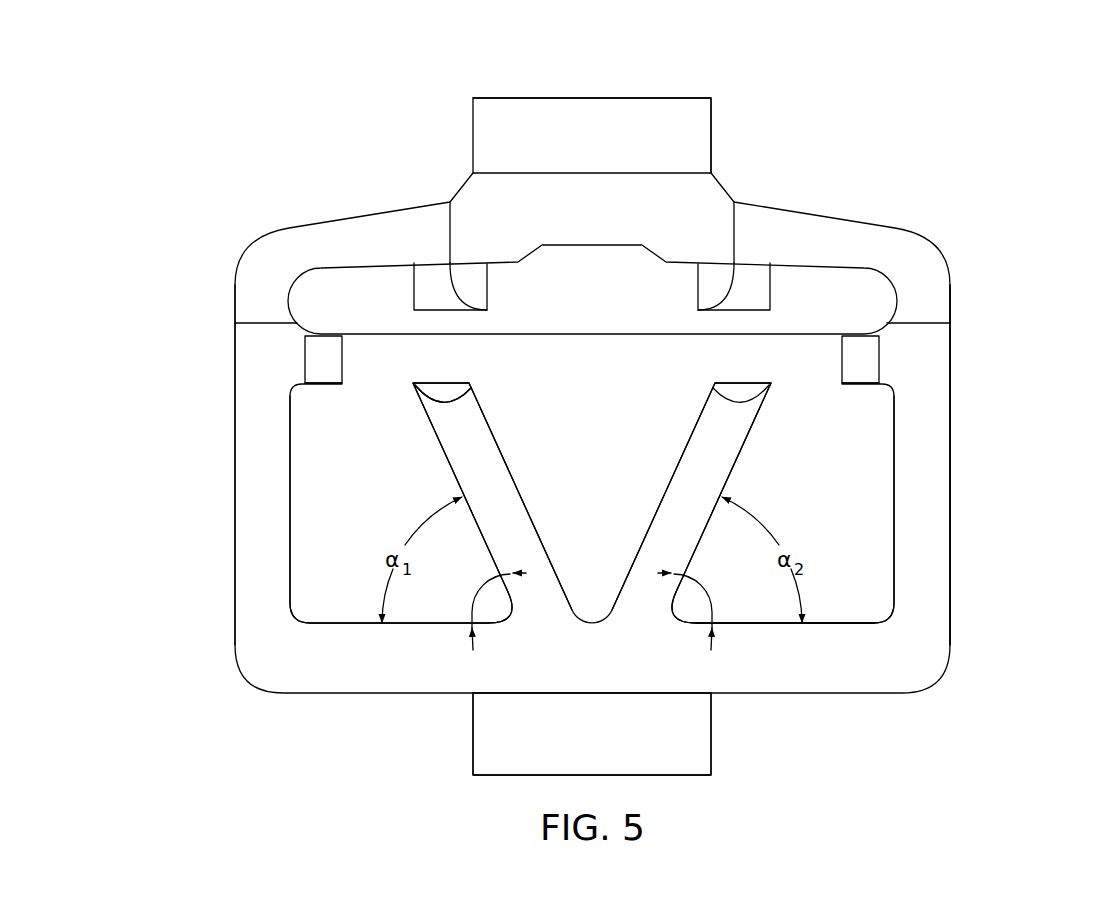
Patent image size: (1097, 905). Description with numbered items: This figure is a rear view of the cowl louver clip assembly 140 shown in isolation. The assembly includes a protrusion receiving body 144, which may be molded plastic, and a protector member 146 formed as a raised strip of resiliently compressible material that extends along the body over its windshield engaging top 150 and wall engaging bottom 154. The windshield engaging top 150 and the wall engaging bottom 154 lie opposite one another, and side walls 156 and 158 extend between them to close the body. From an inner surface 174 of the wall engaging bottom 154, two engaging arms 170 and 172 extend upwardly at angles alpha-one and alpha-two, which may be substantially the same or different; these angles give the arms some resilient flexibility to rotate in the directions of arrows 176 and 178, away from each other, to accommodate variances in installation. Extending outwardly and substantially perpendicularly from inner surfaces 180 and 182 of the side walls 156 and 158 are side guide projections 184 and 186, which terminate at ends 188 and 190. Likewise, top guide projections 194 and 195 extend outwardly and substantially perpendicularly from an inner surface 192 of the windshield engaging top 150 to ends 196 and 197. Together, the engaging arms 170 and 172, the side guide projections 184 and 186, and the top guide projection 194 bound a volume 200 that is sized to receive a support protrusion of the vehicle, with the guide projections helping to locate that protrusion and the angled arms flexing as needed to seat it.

The cowl louver clip assembly 140 is at (972, 128).
The protrusion receiving body 144 is at (938, 312).
The protector member 146 is at (573, 107).
The windshield engaging top 150 is at (778, 112).
The wall engaging bottom 154 is at (302, 722).
The side wall 156 is at (213, 481).
The side wall 158 is at (971, 481).
The engaging arm 170 is at (496, 465).
The engaging arm 172 is at (740, 435).
The inner surface 174 is at (838, 622).
The arrow 176 is at (478, 600).
The arrow 178 is at (708, 600).
The inner surface 180 is at (292, 528).
The inner surface 182 is at (893, 507).
The side guide projection 184 is at (323, 380).
The side guide projection 186 is at (862, 380).
The end 188 is at (345, 360).
The end 190 is at (840, 360).
The inner surface 192 is at (380, 267).
The top guide projection 194 is at (414, 292).
The top guide projection 195 is at (770, 292).
The end 196 is at (458, 312).
The end 197 is at (726, 312).
The volume 200 is at (500, 390).